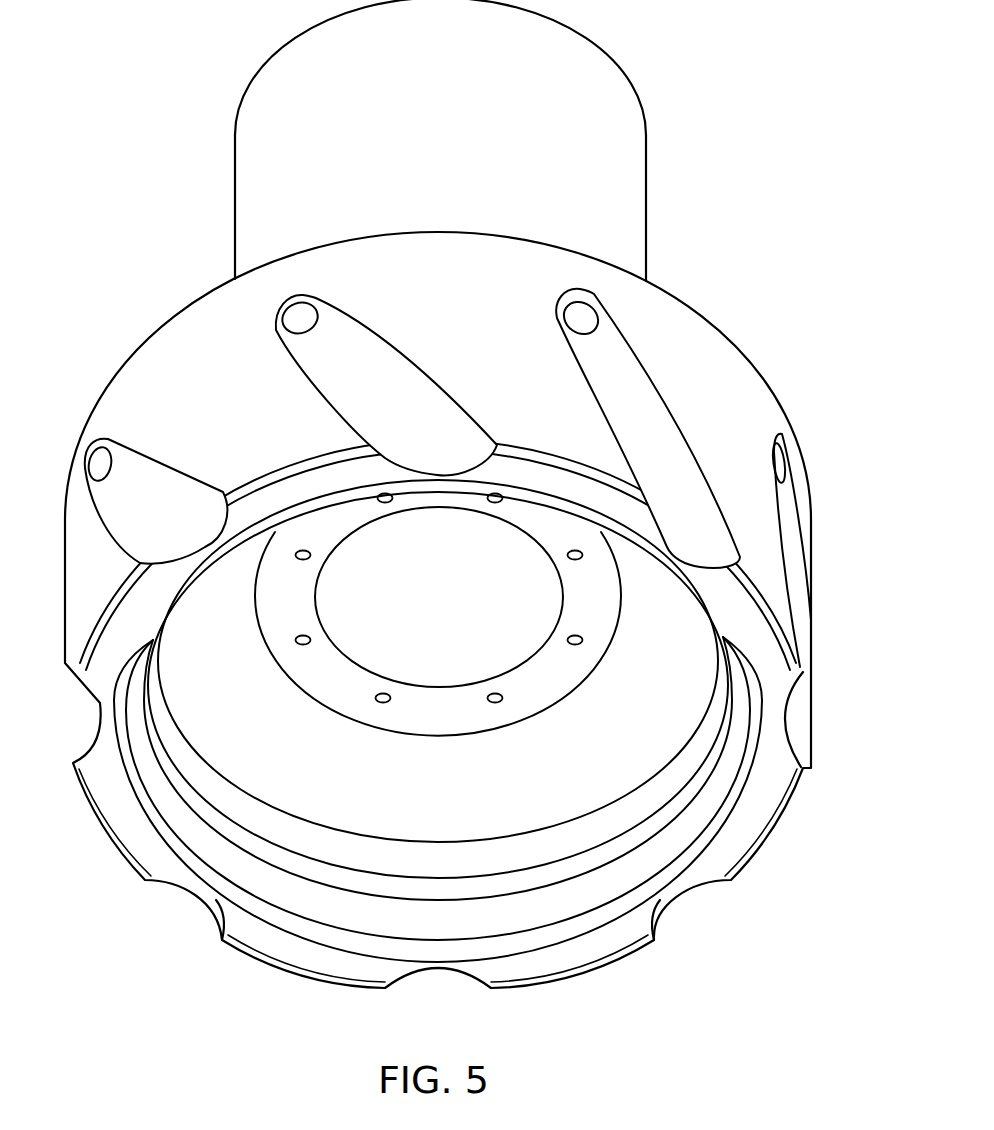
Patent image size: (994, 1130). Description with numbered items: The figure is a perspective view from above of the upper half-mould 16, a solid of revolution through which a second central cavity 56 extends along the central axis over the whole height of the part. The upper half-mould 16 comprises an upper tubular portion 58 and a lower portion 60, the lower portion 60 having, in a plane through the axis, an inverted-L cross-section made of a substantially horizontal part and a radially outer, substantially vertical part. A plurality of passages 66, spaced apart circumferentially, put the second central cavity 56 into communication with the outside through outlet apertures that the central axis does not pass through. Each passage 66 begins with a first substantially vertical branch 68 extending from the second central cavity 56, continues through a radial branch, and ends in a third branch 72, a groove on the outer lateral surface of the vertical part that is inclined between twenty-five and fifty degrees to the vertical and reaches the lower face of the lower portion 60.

The upper half-mould 16 is at (610, 58).
The upper tubular portion 58 is at (284, 152).
The lower portion 60 is at (708, 318).
The passages 66 is at (278, 343).
The third branch 72 is at (690, 430).
The second central cavity 56 is at (452, 608).
The first substantially vertical branch 68 is at (376, 699).